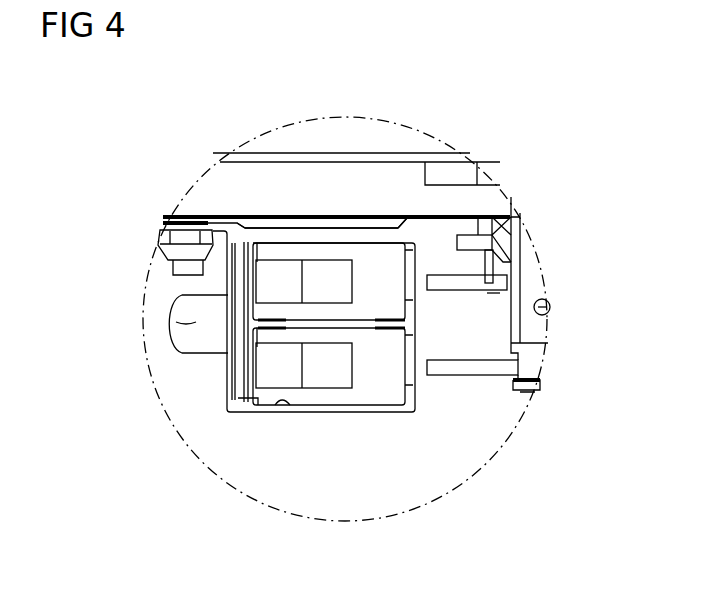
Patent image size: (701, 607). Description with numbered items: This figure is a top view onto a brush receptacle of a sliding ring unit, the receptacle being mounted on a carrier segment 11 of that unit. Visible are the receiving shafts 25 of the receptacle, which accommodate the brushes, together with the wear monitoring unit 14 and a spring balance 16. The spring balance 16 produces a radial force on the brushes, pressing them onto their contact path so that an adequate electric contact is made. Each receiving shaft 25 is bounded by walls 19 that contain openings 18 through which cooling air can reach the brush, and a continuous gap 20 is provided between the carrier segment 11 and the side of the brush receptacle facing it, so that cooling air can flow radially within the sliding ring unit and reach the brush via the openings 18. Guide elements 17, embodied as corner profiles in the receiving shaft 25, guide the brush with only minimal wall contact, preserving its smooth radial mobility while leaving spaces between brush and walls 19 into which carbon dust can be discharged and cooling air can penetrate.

The carrier segment 11 is at (220, 190).
The wear monitoring unit 14 is at (526, 258).
The spring balance 16 is at (188, 332).
The guide element 17 is at (288, 402).
The opening 18 is at (322, 232).
The wall 19 is at (387, 222).
The gap 20 is at (283, 210).
The receiving shaft 25 is at (362, 260).